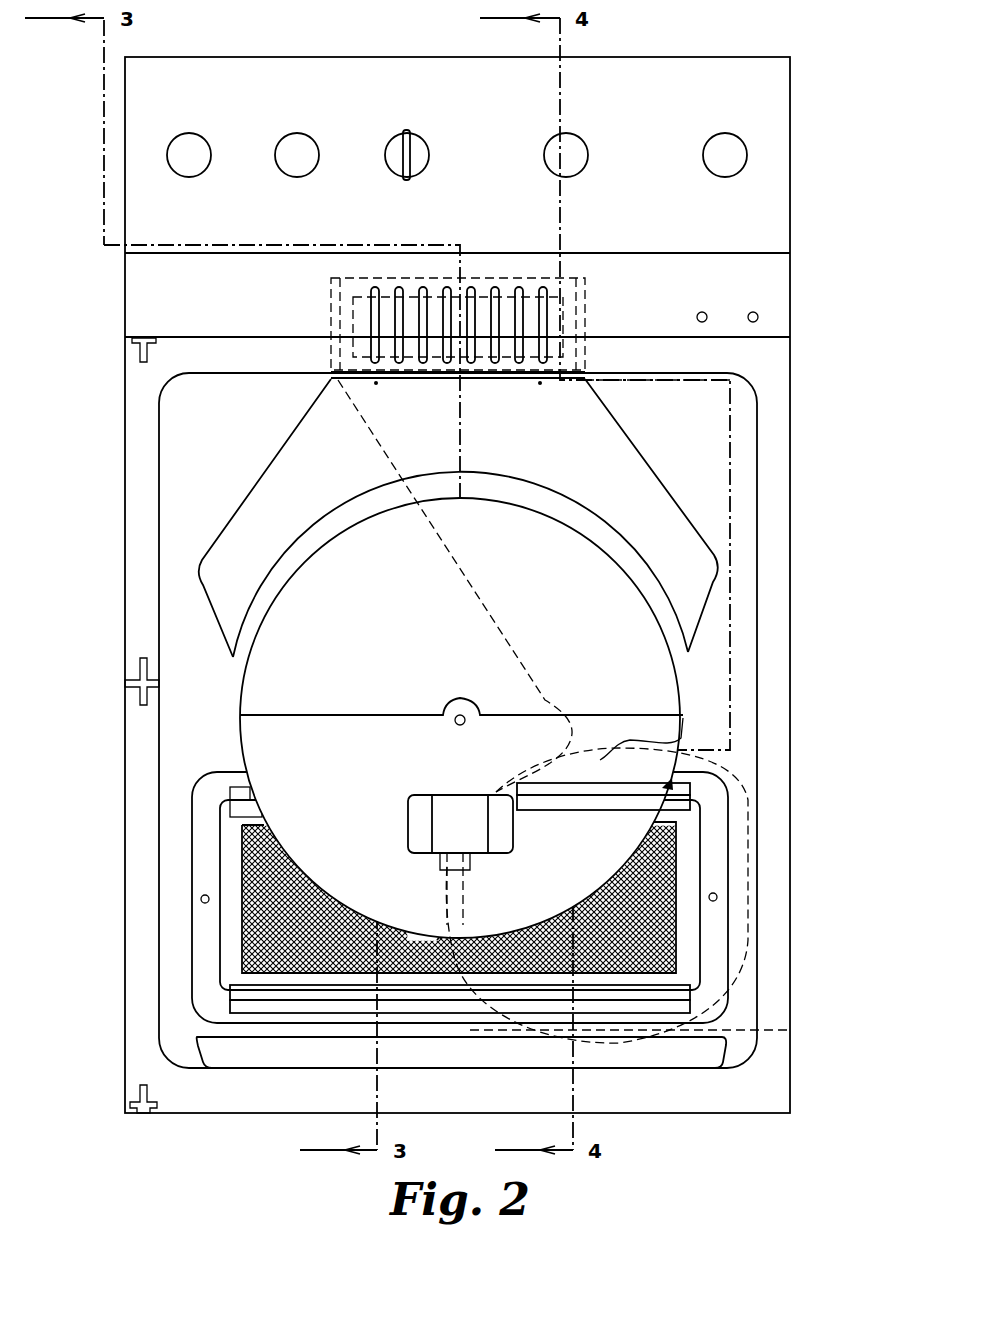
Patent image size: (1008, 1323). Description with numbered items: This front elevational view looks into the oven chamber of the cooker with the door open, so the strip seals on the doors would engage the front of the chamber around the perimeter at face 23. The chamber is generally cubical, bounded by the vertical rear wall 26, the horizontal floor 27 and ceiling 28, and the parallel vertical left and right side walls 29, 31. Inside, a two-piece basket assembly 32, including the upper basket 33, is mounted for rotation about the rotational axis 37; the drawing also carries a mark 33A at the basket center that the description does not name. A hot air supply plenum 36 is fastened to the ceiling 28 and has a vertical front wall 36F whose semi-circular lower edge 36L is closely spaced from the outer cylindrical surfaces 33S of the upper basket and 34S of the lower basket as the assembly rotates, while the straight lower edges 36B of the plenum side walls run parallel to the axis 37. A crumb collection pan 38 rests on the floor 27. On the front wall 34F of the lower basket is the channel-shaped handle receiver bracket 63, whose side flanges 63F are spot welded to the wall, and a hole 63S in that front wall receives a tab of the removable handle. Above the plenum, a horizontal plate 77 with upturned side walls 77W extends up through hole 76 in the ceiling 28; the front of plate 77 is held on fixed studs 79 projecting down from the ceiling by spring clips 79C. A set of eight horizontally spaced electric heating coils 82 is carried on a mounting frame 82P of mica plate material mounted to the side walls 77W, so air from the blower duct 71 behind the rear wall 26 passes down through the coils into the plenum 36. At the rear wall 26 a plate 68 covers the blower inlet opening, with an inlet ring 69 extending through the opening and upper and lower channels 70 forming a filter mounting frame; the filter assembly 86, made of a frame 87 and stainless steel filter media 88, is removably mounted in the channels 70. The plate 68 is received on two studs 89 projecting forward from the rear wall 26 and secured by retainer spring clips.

The face 23 is at (775, 583).
The rear wall 26 is at (828, 735).
The floor 27 is at (743, 1062).
The ceiling 28 is at (722, 386).
The left side wall 29 is at (192, 822).
The right side wall 31 is at (757, 830).
The basket assembly 32 is at (225, 697).
The upper basket 33 is at (461, 718).
The disk axle 33A is at (455, 713).
The outer cylindrical surface of upper basket 33S is at (662, 788).
The front wall of lower basket 34F is at (280, 797).
The outer cylindrical surface of lower basket 34S is at (242, 923).
The hot air supply plenum 36 is at (693, 517).
The lower edges of plenum side walls 36B is at (233, 657).
The front wall of plenum 36F is at (495, 462).
The semi-circular lower edge 36L is at (358, 506).
The rotational axis 37 is at (405, 760).
The crumb collection pan 38 is at (673, 1053).
The handle receiver bracket 63 is at (445, 787).
The side flanges 63F is at (408, 835).
The hole 63S is at (447, 870).
The plate 68 is at (705, 960).
The inlet ring 69 is at (785, 1030).
The channels 70 is at (738, 822).
The duct 71 is at (620, 490).
The hole 76 is at (328, 379).
The horizontal plate 77 is at (335, 382).
The upturned side walls 77W is at (333, 310).
The fixed studs 79 is at (374, 383).
The spring clips 79C is at (376, 383).
The electric heating coils 82 is at (432, 322).
The mounting frame 82P is at (503, 288).
The filter assembly 86 is at (732, 873).
The frame 87 is at (697, 950).
The filter media 88 is at (678, 900).
The studs 89 is at (200, 899).